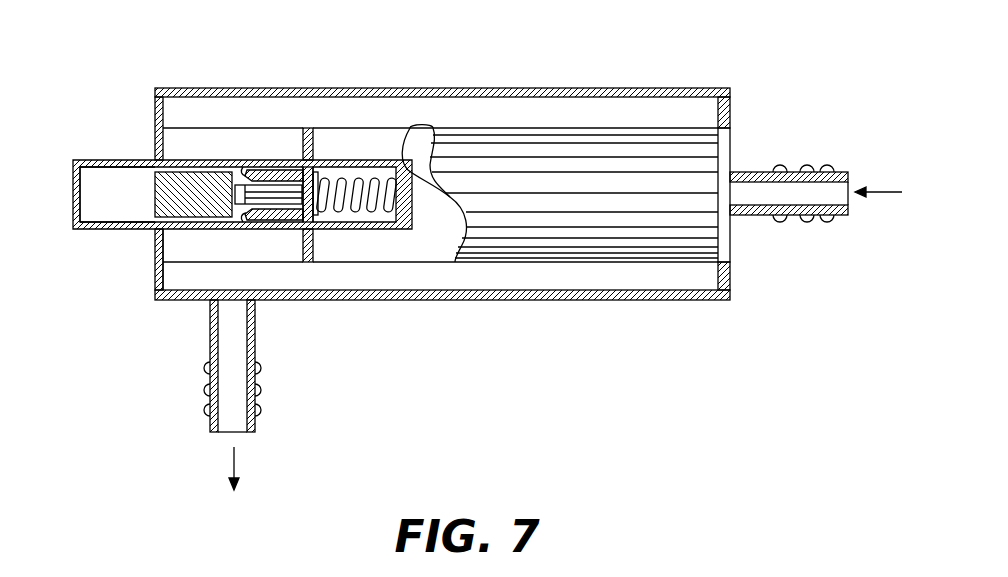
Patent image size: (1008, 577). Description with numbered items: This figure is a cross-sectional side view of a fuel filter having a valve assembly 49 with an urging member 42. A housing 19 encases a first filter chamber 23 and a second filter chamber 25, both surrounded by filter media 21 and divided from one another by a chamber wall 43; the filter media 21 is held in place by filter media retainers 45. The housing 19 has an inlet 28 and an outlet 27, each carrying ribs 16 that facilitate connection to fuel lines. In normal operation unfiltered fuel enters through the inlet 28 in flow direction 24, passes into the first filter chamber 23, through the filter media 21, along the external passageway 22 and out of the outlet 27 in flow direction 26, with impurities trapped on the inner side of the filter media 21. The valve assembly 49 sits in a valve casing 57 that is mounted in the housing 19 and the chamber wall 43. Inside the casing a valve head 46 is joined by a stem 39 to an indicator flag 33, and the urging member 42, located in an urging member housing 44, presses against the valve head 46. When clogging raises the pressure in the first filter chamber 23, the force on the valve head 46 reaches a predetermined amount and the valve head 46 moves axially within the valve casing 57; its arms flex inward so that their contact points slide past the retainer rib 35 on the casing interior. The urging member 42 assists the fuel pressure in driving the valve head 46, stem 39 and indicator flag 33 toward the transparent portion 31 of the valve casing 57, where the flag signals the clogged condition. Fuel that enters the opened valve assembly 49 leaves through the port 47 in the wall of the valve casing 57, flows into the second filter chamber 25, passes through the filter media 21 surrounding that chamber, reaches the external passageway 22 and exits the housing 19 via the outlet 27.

The housing 19 is at (572, 88).
The external passageway 22 is at (690, 110).
The second filter chamber 25 is at (180, 142).
The valve casing 57 is at (205, 163).
The retainer rib 35 is at (247, 165).
The port 47 is at (278, 170).
The chamber wall 43 is at (320, 142).
The urging member housing 44 is at (408, 135).
The valve assembly 49 is at (128, 173).
The transparent portion 31 is at (73, 212).
The filter media retainers 45 is at (727, 245).
The indicator flag 33 is at (193, 200).
The stem 39 is at (284, 190).
The valve head 46 is at (309, 232).
The urging member 42 is at (366, 210).
The first filter chamber 23 is at (420, 240).
The filter media 21 is at (510, 240).
The outlet 27 is at (225, 343).
The ribs 16 is at (827, 222).
The flow direction 26 is at (237, 462).
The inlet 28 is at (765, 183).
The flow direction 24 is at (880, 196).